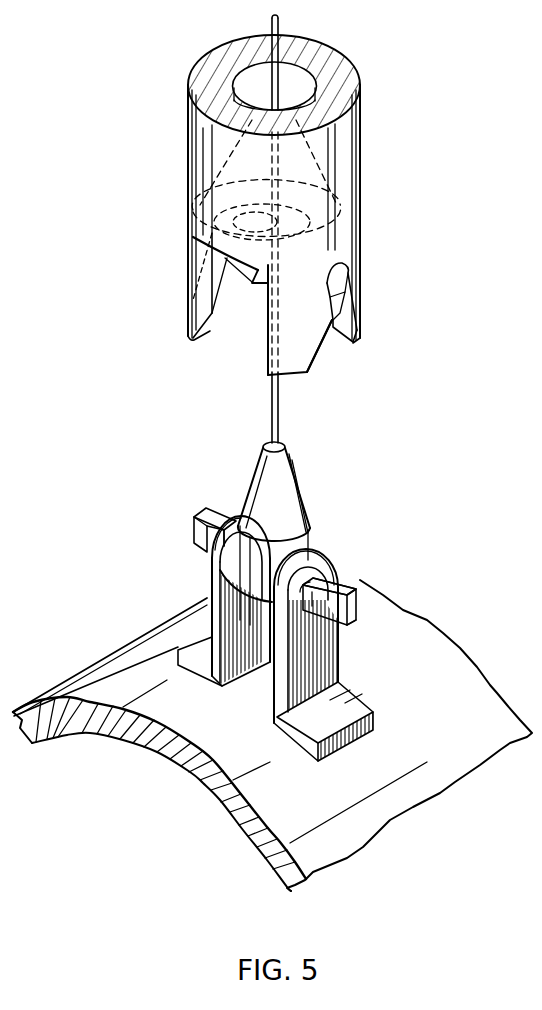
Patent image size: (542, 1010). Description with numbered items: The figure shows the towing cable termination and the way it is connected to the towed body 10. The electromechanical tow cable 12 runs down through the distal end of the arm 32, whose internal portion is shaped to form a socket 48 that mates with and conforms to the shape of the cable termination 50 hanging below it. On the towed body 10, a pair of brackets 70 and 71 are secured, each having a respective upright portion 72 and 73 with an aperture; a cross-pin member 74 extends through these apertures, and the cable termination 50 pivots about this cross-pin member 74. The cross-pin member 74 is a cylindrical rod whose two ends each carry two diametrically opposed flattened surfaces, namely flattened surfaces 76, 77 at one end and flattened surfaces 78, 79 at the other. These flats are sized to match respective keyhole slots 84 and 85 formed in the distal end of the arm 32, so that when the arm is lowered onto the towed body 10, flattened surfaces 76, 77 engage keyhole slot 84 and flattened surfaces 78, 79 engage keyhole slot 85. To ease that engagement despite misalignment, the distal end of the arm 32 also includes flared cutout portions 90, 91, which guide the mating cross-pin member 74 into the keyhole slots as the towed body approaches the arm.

The towed body 10 is at (132, 657).
The tow cable 12 is at (281, 23).
The arm 32 is at (360, 167).
The socket 48 is at (245, 165).
The cable termination 50 is at (301, 484).
The bracket 70 is at (284, 733).
The bracket 71 is at (214, 682).
The upright portion 72 is at (320, 550).
The upright portion 73 is at (228, 523).
The cross-pin member 74 is at (302, 608).
The flattened surface 76 is at (348, 582).
The flattened surface 77 is at (356, 607).
The flattened surface 78 is at (195, 530).
The flattened surface 79 is at (215, 513).
The keyhole slot 84 is at (340, 309).
The keyhole slot 85 is at (193, 231).
The flared cutout portion 90 is at (322, 350).
The flared cutout portion 91 is at (225, 288).